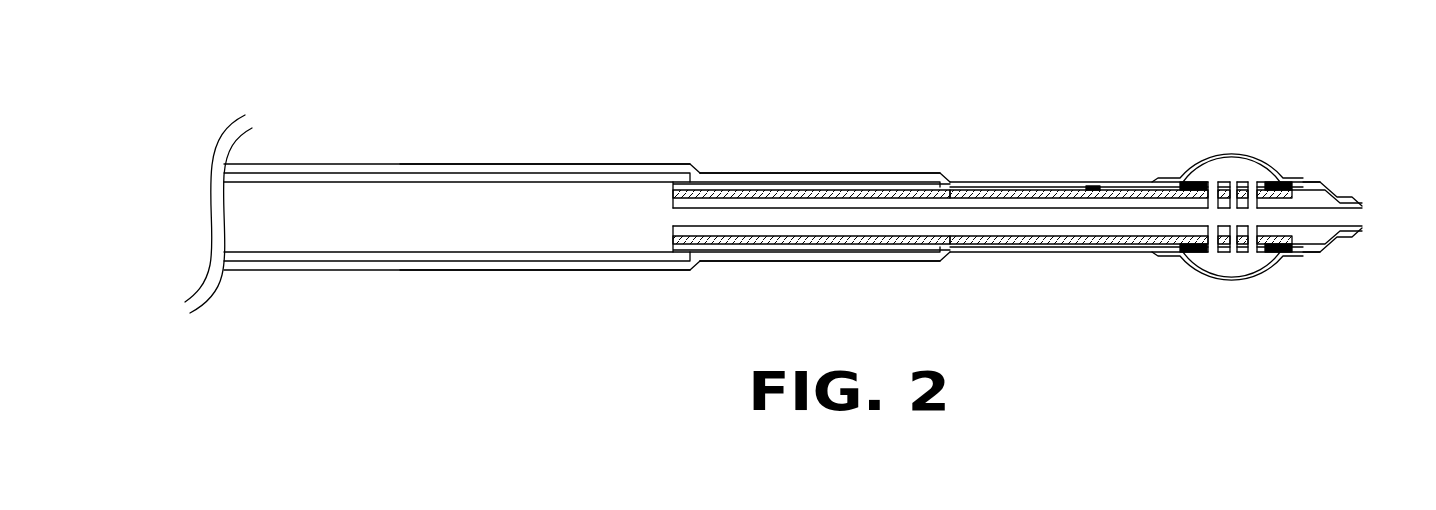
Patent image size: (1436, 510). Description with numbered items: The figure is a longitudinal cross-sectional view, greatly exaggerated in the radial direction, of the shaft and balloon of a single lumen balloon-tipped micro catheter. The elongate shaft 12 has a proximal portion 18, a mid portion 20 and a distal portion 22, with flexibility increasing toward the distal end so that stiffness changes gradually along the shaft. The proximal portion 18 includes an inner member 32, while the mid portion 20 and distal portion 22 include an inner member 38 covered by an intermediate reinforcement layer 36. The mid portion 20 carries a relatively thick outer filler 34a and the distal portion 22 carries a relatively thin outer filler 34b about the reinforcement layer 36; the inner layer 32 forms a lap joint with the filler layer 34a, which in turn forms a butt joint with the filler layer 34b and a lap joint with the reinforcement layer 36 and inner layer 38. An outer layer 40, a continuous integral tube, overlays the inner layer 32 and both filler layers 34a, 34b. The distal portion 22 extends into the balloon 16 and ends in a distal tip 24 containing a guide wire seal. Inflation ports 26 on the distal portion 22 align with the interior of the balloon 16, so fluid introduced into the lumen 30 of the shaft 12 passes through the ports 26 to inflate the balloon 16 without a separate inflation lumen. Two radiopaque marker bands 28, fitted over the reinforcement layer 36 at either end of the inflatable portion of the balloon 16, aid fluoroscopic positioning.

The elongate shaft 12 is at (822, 49).
The balloon 16 is at (1229, 138).
The proximal portion 18 is at (399, 289).
The mid portion 20 is at (798, 280).
The distal portion 22 is at (1062, 274).
The distal tip 24 is at (1358, 182).
The inflation ports 26 is at (1213, 252).
The radiopaque marker bands 28 is at (1190, 182).
The lumen 30 is at (582, 217).
The inner member 32 is at (283, 177).
The outer filler 34a is at (800, 187).
The outer filler 34b is at (1093, 187).
The intermediate reinforcement layer 36 is at (950, 192).
The inner member 38 is at (1000, 205).
The outer layer 40 is at (515, 168).